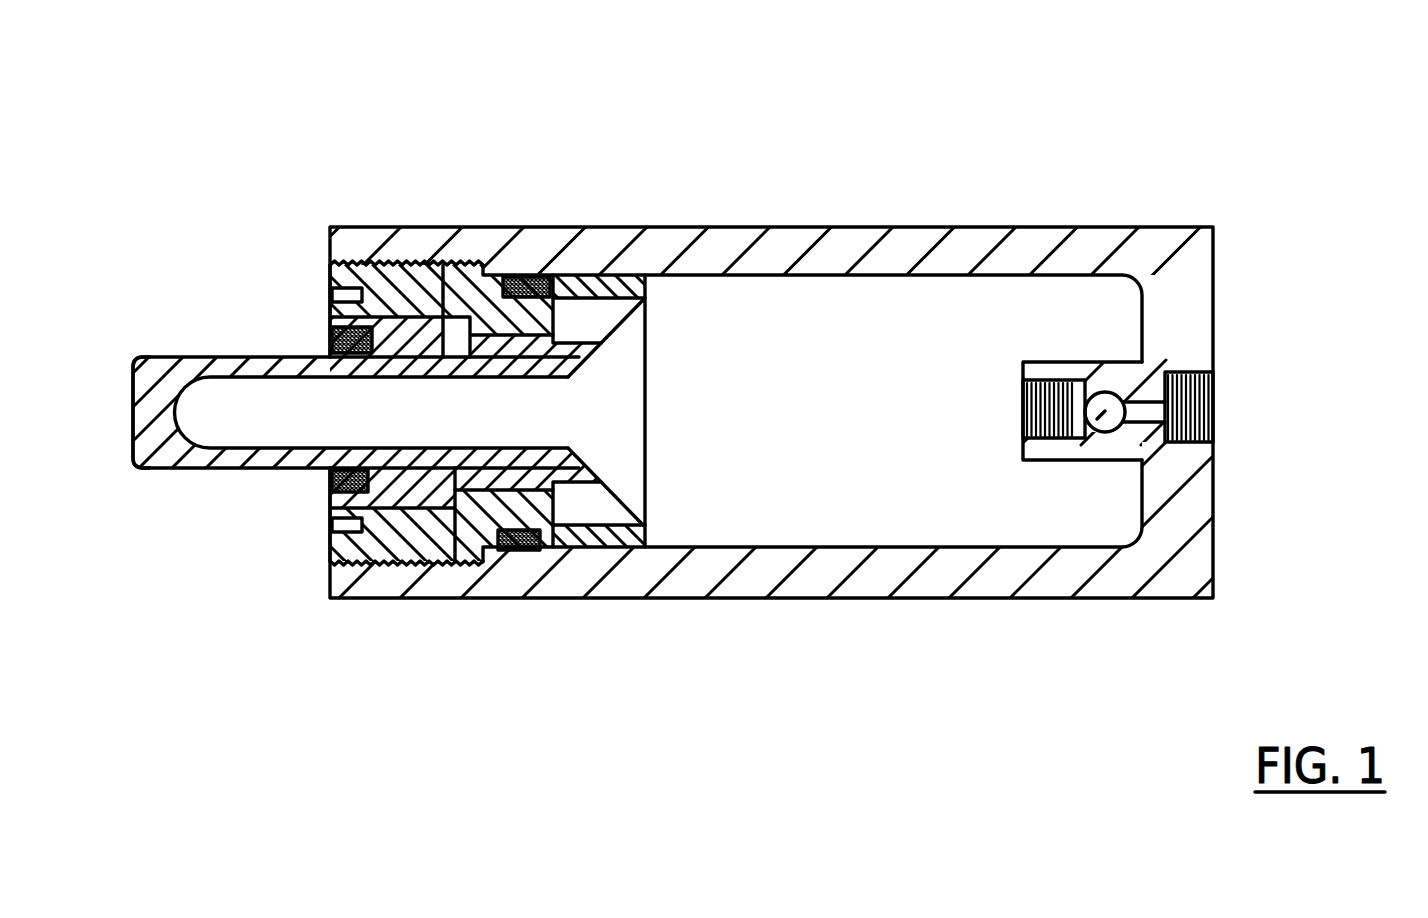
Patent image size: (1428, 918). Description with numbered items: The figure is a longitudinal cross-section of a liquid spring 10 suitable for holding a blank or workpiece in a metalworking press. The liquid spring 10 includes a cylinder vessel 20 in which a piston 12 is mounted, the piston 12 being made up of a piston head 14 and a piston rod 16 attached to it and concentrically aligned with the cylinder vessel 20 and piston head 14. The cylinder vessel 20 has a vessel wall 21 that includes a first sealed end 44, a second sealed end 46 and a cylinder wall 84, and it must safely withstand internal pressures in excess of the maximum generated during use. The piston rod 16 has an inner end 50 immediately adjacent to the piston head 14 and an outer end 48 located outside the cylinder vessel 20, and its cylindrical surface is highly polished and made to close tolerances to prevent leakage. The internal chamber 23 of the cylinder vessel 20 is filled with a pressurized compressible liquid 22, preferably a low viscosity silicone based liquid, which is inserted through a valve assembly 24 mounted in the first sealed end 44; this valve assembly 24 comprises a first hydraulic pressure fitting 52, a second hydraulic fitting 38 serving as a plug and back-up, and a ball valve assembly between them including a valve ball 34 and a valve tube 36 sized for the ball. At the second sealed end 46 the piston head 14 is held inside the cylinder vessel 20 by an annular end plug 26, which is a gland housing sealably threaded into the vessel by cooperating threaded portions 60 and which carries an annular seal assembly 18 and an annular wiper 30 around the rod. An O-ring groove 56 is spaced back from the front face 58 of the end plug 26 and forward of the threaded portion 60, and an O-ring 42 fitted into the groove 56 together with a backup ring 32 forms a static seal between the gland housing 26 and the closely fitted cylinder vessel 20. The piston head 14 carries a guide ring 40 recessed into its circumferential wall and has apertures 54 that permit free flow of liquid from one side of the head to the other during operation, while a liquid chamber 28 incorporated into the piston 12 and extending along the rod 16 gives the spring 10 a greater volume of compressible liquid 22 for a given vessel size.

The liquid spring 10 is at (1310, 215).
The piston 12 is at (680, 405).
The piston head 14 is at (645, 497).
The piston rod 16 is at (148, 372).
The annular seal assembly 18 is at (485, 480).
The cylinder vessel 20 is at (678, 615).
The vessel wall 21 is at (1082, 632).
The compressible liquid 22 is at (771, 300).
The internal chamber 23 is at (868, 364).
The valve assembly 24 is at (1048, 380).
The end plug 26 is at (385, 540).
The liquid chamber 28 is at (243, 393).
The annular wiper 30 is at (326, 498).
The backup ring 32 is at (496, 545).
The valve ball 34 is at (1097, 420).
The valve tube 36 is at (1135, 402).
The second hydraulic fitting 38 is at (1215, 423).
The guide ring 40 is at (592, 290).
The O-ring 42 is at (525, 288).
The first sealed end 44 is at (1243, 516).
The second sealed end 46 is at (285, 250).
The outer end 48 is at (140, 456).
The inner end 50 is at (445, 370).
The first hydraulic pressure fitting 52 is at (1023, 406).
The aperture 54 is at (600, 323).
The O-ring groove 56 is at (530, 545).
The front face 58 is at (645, 455).
The threaded portion 60 is at (372, 240).
The cylinder wall 84 is at (1025, 240).